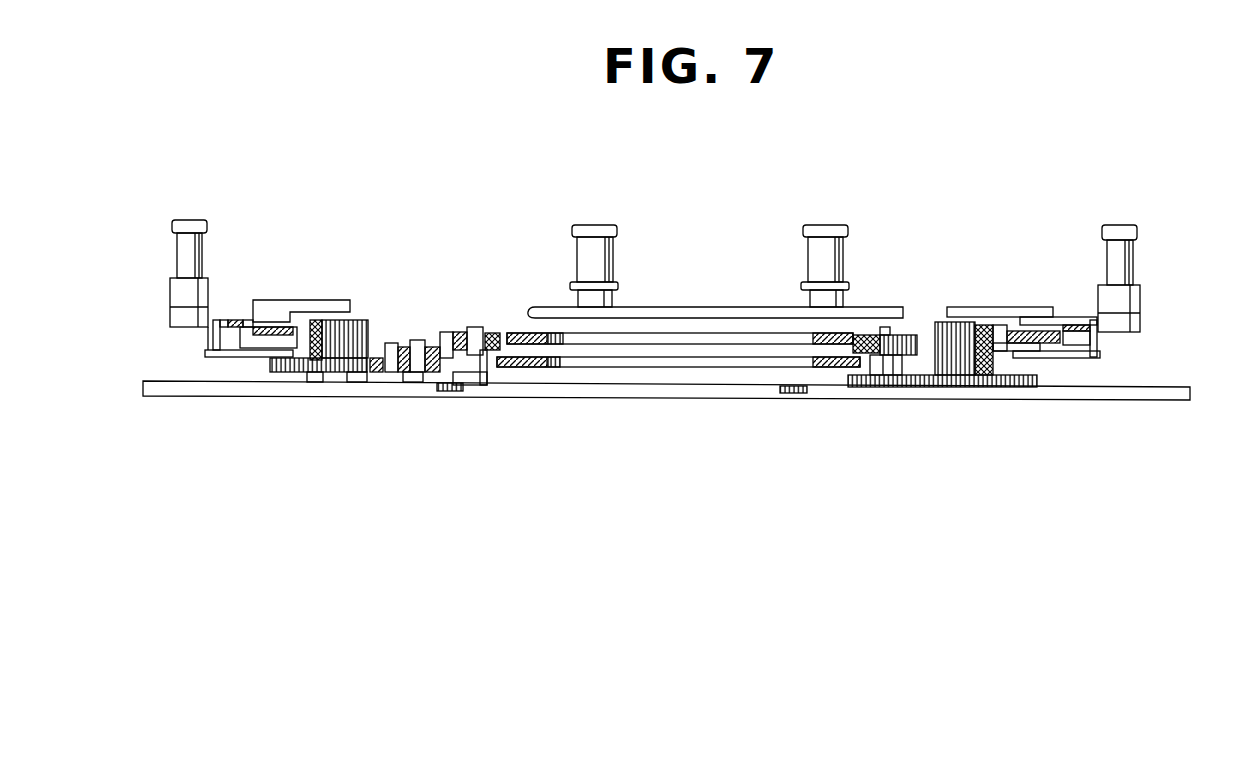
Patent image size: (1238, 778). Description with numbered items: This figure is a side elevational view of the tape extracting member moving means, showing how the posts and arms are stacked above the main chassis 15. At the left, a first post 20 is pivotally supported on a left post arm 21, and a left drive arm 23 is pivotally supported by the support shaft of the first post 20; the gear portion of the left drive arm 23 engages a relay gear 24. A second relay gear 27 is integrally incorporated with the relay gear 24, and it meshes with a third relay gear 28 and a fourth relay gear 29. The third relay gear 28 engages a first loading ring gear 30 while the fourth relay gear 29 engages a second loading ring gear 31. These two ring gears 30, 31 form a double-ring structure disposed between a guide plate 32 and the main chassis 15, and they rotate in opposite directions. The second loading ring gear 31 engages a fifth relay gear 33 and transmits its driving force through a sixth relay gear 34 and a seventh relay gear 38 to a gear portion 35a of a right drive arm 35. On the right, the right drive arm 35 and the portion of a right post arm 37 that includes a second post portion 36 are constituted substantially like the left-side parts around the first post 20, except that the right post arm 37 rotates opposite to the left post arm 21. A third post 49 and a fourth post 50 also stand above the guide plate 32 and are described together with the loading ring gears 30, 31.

The main chassis 15 is at (1030, 399).
The first post 20 is at (180, 255).
The left post arm 21 is at (172, 320).
The left drive arm 23 is at (243, 357).
The relay gear 24 is at (305, 348).
The second relay gear 27 is at (367, 368).
The third relay gear 28 is at (400, 343).
The fourth relay gear 29 is at (450, 327).
The first loading ring gear 30 is at (535, 368).
The second loading ring gear 31 is at (580, 345).
The guide plate 32 is at (680, 306).
The fifth relay gear 33 is at (895, 375).
The sixth relay gear 34 is at (978, 388).
The right drive arm 35 is at (1090, 357).
The gear portion 35a is at (1040, 357).
The second post portion 36 is at (1128, 253).
The right post arm 37 is at (1137, 323).
The seventh relay gear 38 is at (940, 322).
The third post 49 is at (842, 250).
The fourth post 50 is at (616, 248).